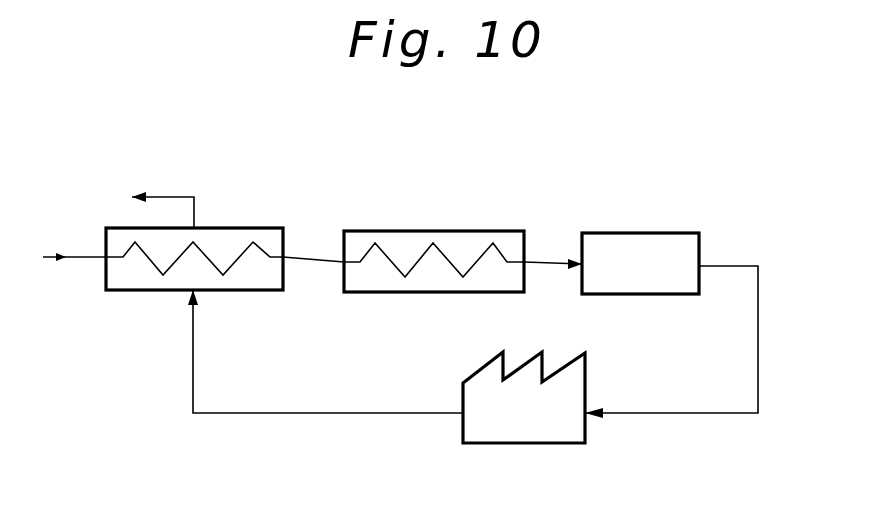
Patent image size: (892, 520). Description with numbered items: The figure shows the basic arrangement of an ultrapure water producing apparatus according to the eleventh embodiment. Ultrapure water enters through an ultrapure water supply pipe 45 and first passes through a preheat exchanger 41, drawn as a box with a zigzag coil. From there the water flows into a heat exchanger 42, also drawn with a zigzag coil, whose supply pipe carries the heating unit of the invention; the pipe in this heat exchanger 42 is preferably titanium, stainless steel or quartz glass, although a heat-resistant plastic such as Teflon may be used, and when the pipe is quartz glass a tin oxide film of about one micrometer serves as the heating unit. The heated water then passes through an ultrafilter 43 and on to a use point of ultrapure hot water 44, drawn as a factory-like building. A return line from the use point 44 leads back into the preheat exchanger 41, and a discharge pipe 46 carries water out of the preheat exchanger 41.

The preheat exchanger 41 is at (267, 228).
The heat exchanger 42 is at (490, 231).
The ultrafilter 43 is at (668, 233).
The use point of ultrapure hot water 44 is at (587, 370).
The ultrapure water supply pipe 45 is at (80, 258).
The discharge pipe 46 is at (178, 197).